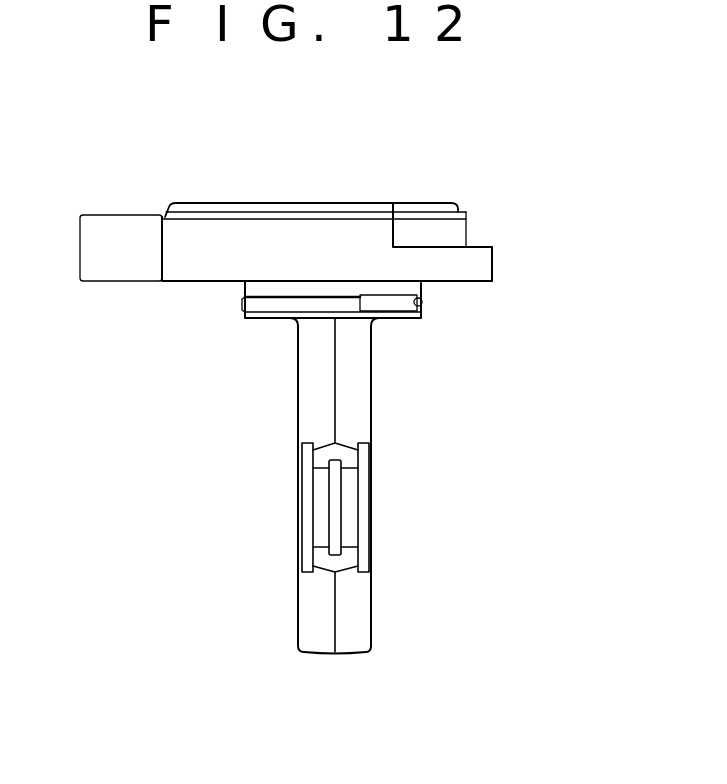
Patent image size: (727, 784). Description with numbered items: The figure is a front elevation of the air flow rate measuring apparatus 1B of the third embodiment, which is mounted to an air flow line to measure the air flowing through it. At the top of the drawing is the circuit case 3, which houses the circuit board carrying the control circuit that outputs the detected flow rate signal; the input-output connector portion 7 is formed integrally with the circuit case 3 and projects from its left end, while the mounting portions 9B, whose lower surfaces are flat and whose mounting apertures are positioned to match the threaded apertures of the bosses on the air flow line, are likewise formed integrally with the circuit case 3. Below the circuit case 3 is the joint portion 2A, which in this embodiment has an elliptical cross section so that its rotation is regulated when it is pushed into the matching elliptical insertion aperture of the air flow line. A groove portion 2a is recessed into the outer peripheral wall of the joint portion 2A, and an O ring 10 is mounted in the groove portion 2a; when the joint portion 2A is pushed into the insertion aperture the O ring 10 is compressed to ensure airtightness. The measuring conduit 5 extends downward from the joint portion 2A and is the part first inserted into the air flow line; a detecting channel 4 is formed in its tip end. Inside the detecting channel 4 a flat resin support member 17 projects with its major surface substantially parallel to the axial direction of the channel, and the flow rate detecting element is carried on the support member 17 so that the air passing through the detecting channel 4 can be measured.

The air flow rate measuring apparatus 1B is at (125, 138).
The circuit case 3 is at (237, 228).
The input-output connector portion 7 is at (93, 276).
The mounting portions 9B is at (495, 257).
The joint portion 2A is at (232, 283).
The O ring 10 is at (423, 302).
The groove portion 2a is at (398, 303).
The measuring conduit 5 is at (365, 417).
The detecting channel 4 is at (322, 508).
The support member 17 is at (333, 529).